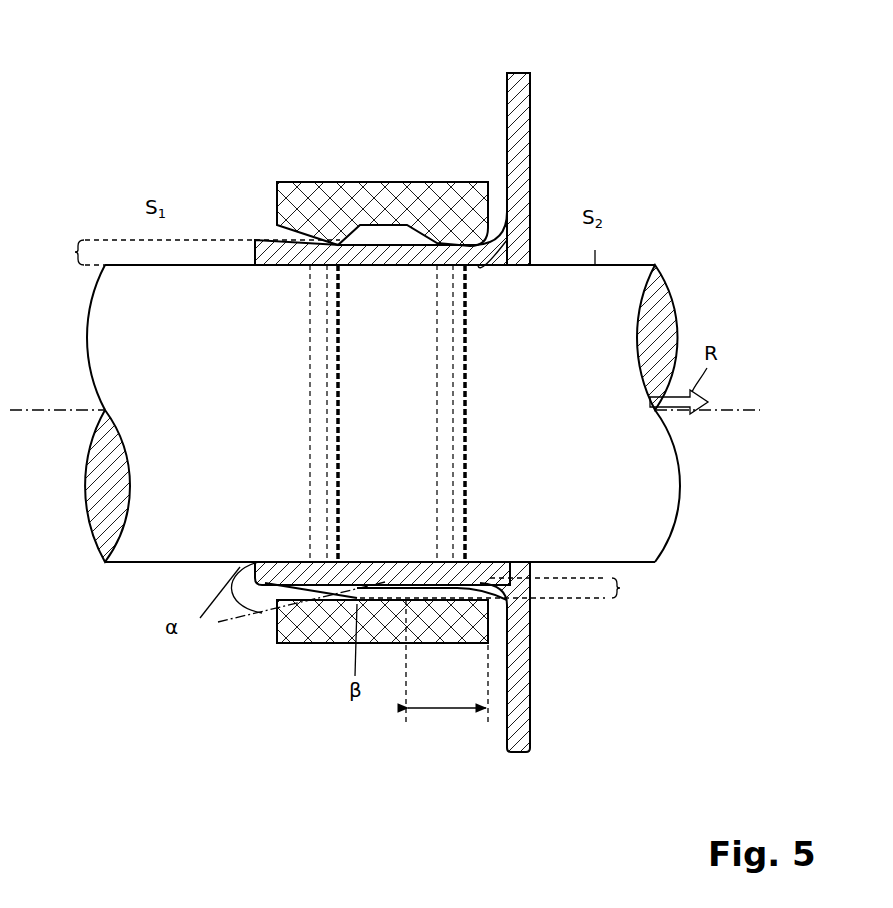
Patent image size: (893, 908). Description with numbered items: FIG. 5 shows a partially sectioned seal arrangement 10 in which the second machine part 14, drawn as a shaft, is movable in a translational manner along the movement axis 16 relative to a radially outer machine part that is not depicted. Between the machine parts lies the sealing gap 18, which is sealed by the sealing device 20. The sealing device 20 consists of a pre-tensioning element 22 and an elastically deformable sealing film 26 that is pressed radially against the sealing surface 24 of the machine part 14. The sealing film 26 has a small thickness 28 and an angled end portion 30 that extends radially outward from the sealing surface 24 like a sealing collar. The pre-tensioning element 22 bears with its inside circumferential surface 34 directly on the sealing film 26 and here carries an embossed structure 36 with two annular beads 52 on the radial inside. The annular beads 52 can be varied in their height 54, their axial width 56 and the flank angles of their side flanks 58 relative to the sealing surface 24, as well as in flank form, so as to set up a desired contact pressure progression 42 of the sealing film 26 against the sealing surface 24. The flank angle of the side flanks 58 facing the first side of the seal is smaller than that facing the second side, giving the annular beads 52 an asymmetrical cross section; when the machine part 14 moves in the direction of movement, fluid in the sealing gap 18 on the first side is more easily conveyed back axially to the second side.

The seal arrangement 10 is at (724, 93).
The second machine part 14 is at (546, 479).
The movement axis 16 is at (695, 414).
The sealing gap 18 is at (568, 251).
The sealing device 20 is at (385, 178).
The pre-tensioning element 22 is at (290, 205).
The sealing surface 24 is at (598, 263).
The sealing film 26 is at (256, 240).
The thickness 28 is at (146, 253).
The end portion 30 is at (520, 180).
The inside circumferential surface 34 is at (478, 266).
The embossed structure 36 is at (433, 248).
The contact pressure progression 42 is at (397, 450).
The annular beads 52 is at (340, 578).
The height 54 is at (636, 589).
The axial width 56 is at (440, 712).
The side flanks 58 is at (355, 562).